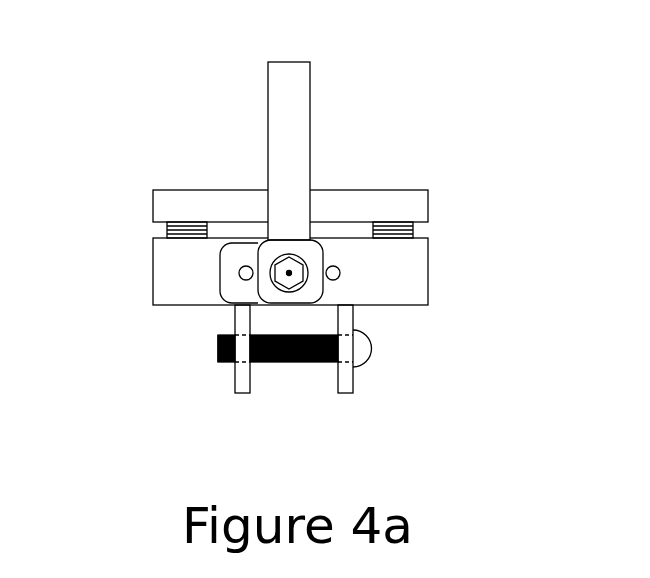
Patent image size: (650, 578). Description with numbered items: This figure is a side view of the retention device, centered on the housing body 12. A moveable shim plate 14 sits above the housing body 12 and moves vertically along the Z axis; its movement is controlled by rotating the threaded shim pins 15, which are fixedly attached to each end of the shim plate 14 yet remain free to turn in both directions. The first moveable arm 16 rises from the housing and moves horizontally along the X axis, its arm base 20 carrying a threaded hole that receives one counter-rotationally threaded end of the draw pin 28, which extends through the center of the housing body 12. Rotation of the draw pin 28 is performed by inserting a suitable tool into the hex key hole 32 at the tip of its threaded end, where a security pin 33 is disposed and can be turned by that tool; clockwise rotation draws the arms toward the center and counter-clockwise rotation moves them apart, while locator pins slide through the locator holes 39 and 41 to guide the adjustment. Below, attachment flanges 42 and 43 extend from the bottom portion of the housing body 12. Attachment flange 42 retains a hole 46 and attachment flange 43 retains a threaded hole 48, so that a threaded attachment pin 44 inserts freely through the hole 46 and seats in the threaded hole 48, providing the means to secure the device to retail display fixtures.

The housing body 12 is at (428, 295).
The shim plate 14 is at (418, 205).
The threaded shim pins 15 is at (168, 230).
The first moveable arm 16 is at (289, 72).
The arm base 20 is at (210, 296).
The draw pin 28 is at (289, 272).
The hex key hole 32 is at (289, 272).
The security pin 33 is at (289, 273).
The locator hole 39 is at (340, 278).
The locator hole 41 is at (240, 278).
The attachment flange 42 is at (348, 380).
The attachment flange 43 is at (240, 380).
The threaded attachment pin 44 is at (325, 362).
The hole 46 is at (345, 350).
The threaded hole 48 is at (222, 352).